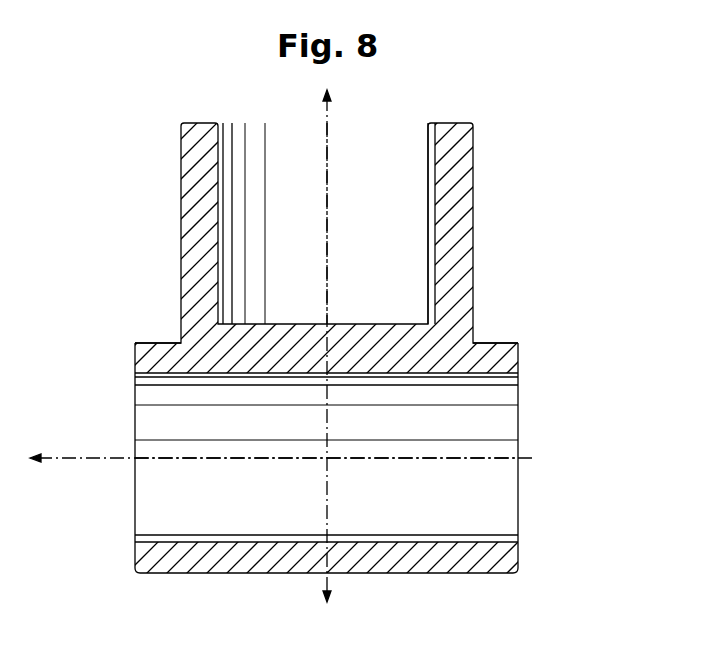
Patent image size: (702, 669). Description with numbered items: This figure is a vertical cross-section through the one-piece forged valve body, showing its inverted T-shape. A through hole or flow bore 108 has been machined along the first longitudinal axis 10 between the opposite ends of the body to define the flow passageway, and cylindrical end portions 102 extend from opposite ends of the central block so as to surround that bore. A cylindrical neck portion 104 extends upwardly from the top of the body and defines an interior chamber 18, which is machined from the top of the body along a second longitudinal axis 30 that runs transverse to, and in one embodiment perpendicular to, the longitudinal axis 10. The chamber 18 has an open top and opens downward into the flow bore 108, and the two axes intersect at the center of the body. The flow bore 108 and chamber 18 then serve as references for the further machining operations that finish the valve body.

The longitudinal axis 10 is at (78, 462).
The interior chamber 18 is at (412, 132).
The longitudinal axis 30 is at (328, 180).
The cylindrical end portions 102 is at (150, 342).
The cylindrical neck portion 104 is at (473, 217).
The flow bore 108 is at (498, 498).